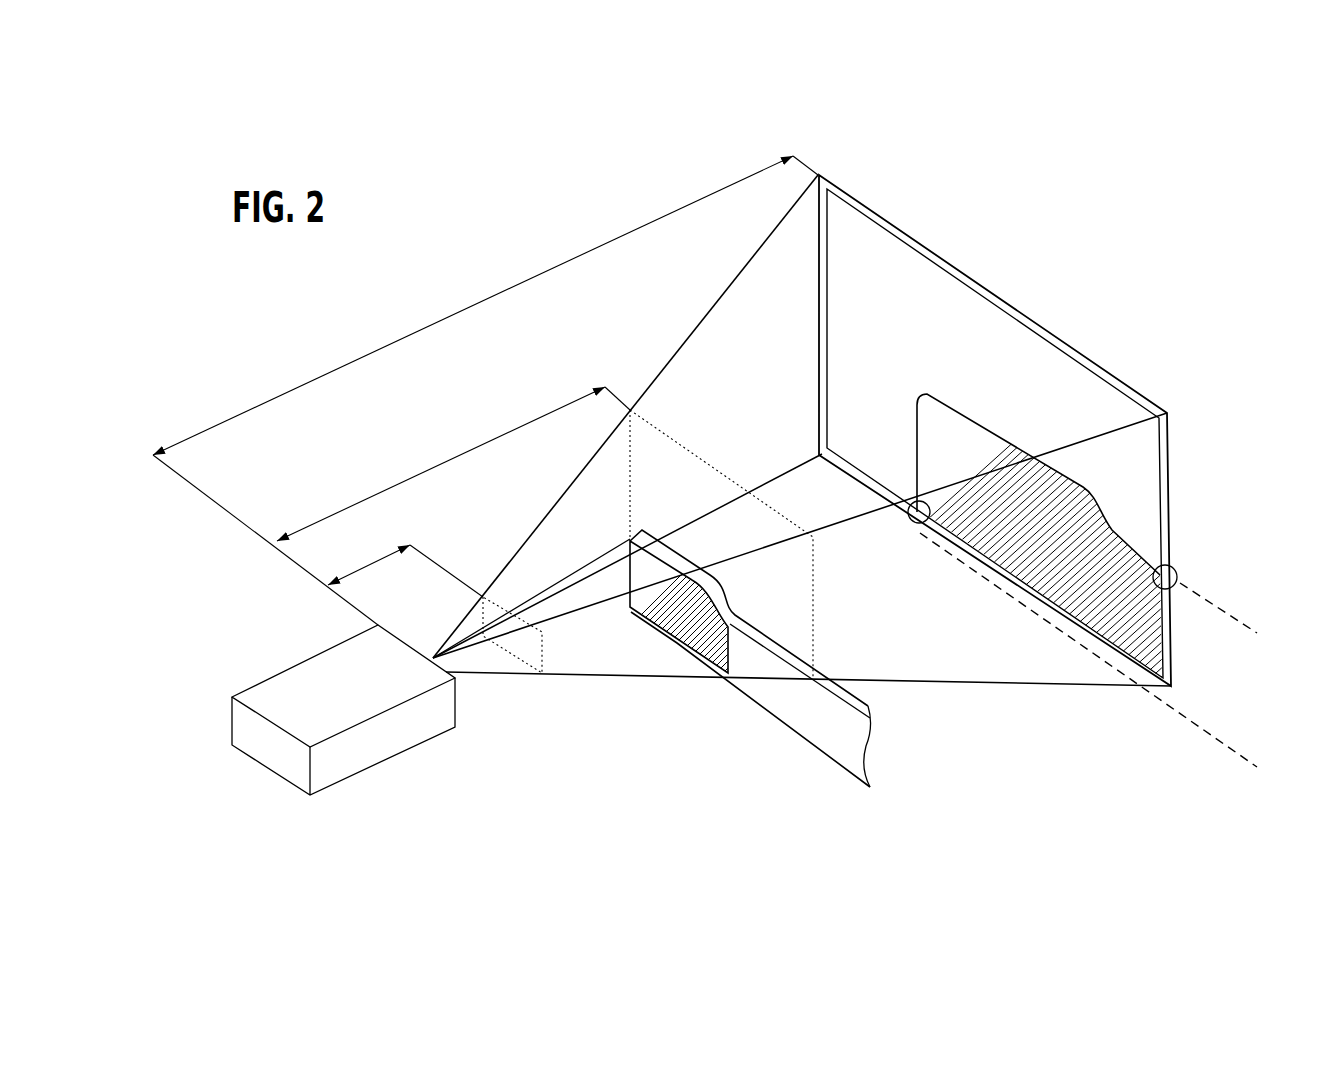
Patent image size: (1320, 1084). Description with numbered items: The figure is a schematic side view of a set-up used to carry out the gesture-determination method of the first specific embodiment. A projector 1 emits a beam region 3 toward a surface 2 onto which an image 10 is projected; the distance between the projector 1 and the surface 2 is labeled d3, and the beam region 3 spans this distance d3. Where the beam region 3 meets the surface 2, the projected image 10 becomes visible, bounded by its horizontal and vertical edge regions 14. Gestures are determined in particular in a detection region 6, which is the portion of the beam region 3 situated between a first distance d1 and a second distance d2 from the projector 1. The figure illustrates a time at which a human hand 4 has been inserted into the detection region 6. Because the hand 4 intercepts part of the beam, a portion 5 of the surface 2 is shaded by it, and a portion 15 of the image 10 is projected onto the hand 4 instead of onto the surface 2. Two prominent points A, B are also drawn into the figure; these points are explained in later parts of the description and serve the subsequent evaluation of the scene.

The projector 1 is at (385, 742).
The surface 2 is at (995, 430).
The beam region 3 is at (678, 350).
The human hand 4 is at (733, 662).
The portion of surface 5 is at (1047, 572).
The detection region 6 is at (600, 660).
The image 10 is at (890, 262).
The edge regions 14 is at (820, 322).
The portion of image 15 is at (680, 622).
The prominent point A is at (1178, 572).
The prominent point B is at (912, 525).
The first distance d1 is at (355, 573).
The second distance d2 is at (442, 464).
The distance d3 is at (525, 283).